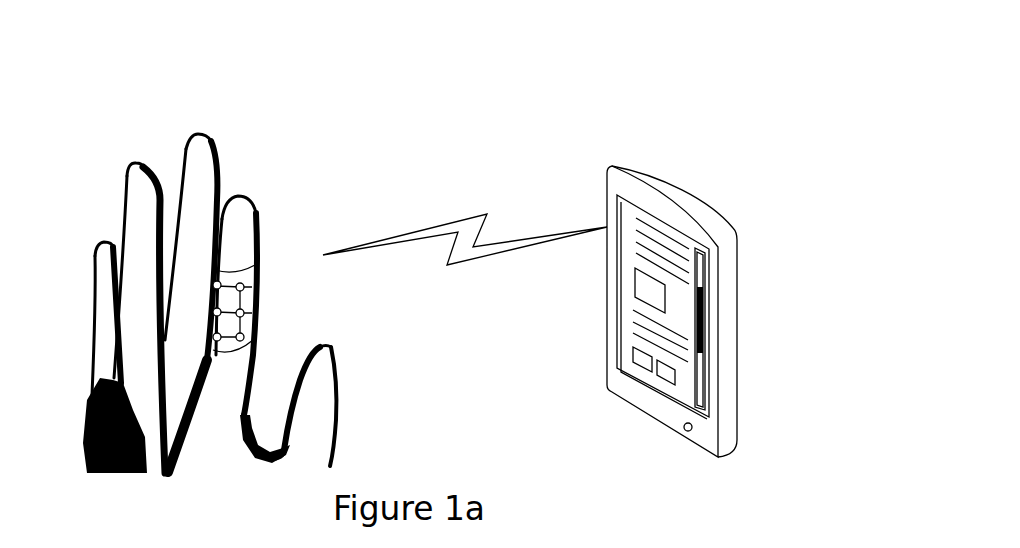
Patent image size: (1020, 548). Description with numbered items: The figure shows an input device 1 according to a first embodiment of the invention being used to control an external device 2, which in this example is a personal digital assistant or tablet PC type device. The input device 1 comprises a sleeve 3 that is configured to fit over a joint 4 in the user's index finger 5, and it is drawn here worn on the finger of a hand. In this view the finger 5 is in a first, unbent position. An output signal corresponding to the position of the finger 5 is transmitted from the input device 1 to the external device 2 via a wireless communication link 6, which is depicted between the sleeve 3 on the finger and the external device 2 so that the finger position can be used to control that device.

The input device 1 is at (341, 268).
The external device 2 is at (651, 130).
The sleeve 3 is at (257, 330).
The joint 4 is at (280, 312).
The index finger 5 is at (273, 197).
The wireless communication link 6 is at (477, 197).